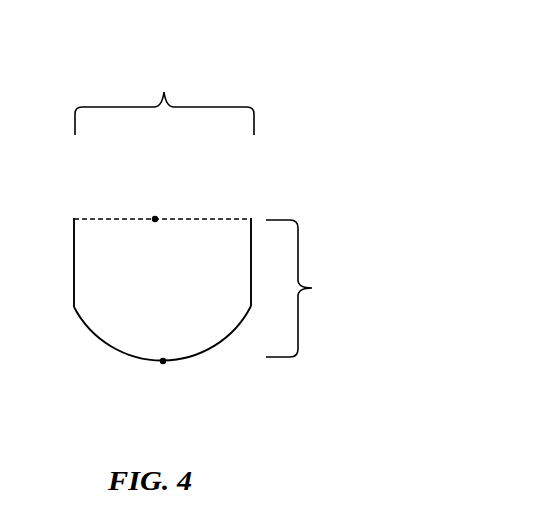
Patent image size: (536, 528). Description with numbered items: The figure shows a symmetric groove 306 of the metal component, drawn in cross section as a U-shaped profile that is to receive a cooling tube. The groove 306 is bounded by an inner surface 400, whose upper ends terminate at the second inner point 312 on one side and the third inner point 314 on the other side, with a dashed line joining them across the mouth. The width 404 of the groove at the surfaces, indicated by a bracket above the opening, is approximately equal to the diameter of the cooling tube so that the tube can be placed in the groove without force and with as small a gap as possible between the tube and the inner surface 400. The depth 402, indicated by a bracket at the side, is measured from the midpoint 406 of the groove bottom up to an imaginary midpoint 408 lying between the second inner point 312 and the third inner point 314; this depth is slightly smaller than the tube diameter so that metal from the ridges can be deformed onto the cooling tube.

The groove 306 is at (425, 105).
The second inner point 312 is at (74, 218).
The third inner point 314 is at (251, 218).
The inner surface 400 is at (147, 362).
The depth 402 is at (319, 288).
The width 404 is at (164, 84).
The midpoint of the groove bottom 406 is at (163, 362).
The imaginary midpoint 408 is at (155, 218).